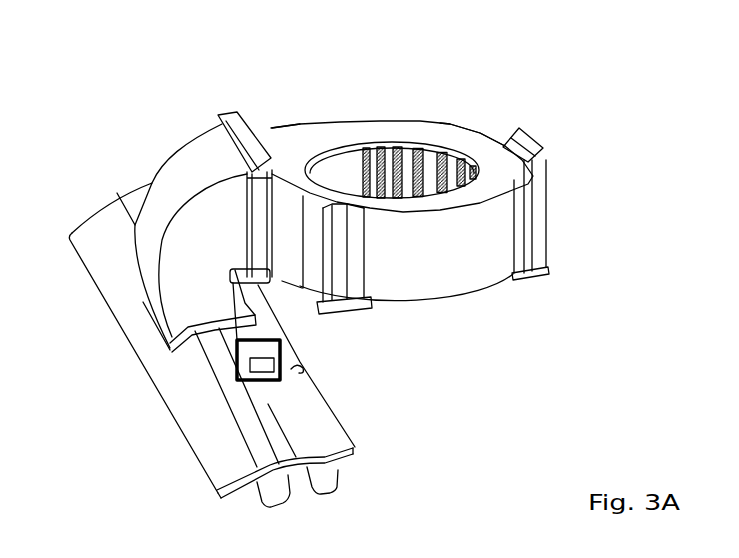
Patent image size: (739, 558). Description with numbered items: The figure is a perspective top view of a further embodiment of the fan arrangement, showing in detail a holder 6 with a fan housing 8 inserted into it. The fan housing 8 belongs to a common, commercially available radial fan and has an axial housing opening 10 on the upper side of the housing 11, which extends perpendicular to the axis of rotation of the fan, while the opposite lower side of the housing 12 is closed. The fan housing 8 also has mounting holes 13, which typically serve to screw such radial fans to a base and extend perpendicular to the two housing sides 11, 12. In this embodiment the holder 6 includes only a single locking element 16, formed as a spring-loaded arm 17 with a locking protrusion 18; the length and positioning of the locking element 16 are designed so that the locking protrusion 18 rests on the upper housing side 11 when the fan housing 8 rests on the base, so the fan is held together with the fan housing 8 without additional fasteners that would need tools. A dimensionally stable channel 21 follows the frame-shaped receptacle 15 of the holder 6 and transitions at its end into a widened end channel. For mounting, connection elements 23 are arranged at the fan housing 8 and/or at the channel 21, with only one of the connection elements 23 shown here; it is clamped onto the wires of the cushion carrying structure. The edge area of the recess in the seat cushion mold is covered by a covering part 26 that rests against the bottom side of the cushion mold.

The holder 6 is at (356, 314).
The fan housing 8 is at (402, 188).
The axial housing opening 10 is at (354, 138).
The upper side of the housing 11 is at (418, 136).
The lower side of the housing 12 is at (473, 299).
The mounting holes 13 is at (464, 122).
The frame-shaped receptacle 15 is at (258, 139).
The locking element 16 is at (557, 183).
The spring-loaded arm 17 is at (550, 262).
The locking protrusion 18 is at (520, 139).
The channel 21 is at (195, 178).
The connection element 23 is at (267, 380).
The covering part 26 is at (81, 209).